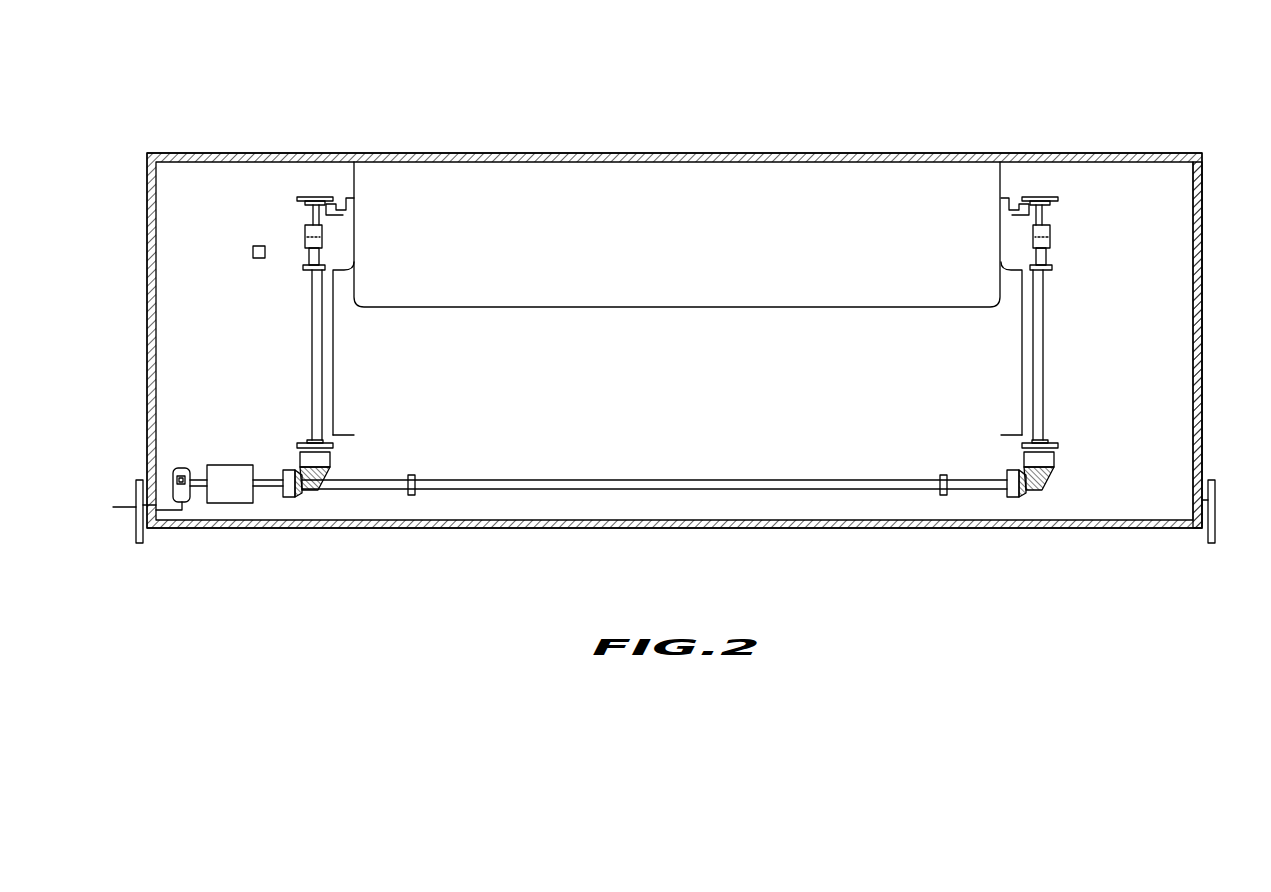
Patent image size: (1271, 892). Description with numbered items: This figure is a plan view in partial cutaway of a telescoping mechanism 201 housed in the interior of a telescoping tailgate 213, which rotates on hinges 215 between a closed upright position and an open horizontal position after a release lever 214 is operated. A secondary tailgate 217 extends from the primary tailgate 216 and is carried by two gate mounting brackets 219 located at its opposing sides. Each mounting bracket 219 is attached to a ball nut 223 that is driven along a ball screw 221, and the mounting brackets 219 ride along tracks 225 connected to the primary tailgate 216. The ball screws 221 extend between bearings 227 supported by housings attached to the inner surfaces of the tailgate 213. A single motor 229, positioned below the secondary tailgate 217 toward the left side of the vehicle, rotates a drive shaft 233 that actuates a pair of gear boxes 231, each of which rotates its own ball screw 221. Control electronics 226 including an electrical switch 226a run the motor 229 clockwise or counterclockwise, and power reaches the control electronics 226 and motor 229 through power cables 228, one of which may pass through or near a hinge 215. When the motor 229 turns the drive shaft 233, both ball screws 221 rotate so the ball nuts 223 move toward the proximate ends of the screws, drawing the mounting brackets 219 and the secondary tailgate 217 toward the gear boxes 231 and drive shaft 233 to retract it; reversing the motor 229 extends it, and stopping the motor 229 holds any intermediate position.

The telescoping mechanism 201 is at (338, 149).
The tailgate 213 is at (243, 149).
The release lever 214 is at (252, 252).
The hinge 215 is at (155, 543).
The primary tailgate 216 is at (1105, 170).
The secondary tailgate 217 is at (740, 149).
The gate mounting bracket 219 is at (345, 221).
The ball screw 221 is at (307, 352).
The ball nut 223 is at (296, 231).
The track 225 is at (359, 357).
The control electronics 226 is at (173, 490).
The switch 226a is at (177, 476).
The bearing 227 is at (292, 197).
The power cable 228 is at (112, 507).
The motor 229 is at (212, 461).
The gear box 231 is at (306, 500).
The drive shaft 233 is at (763, 494).